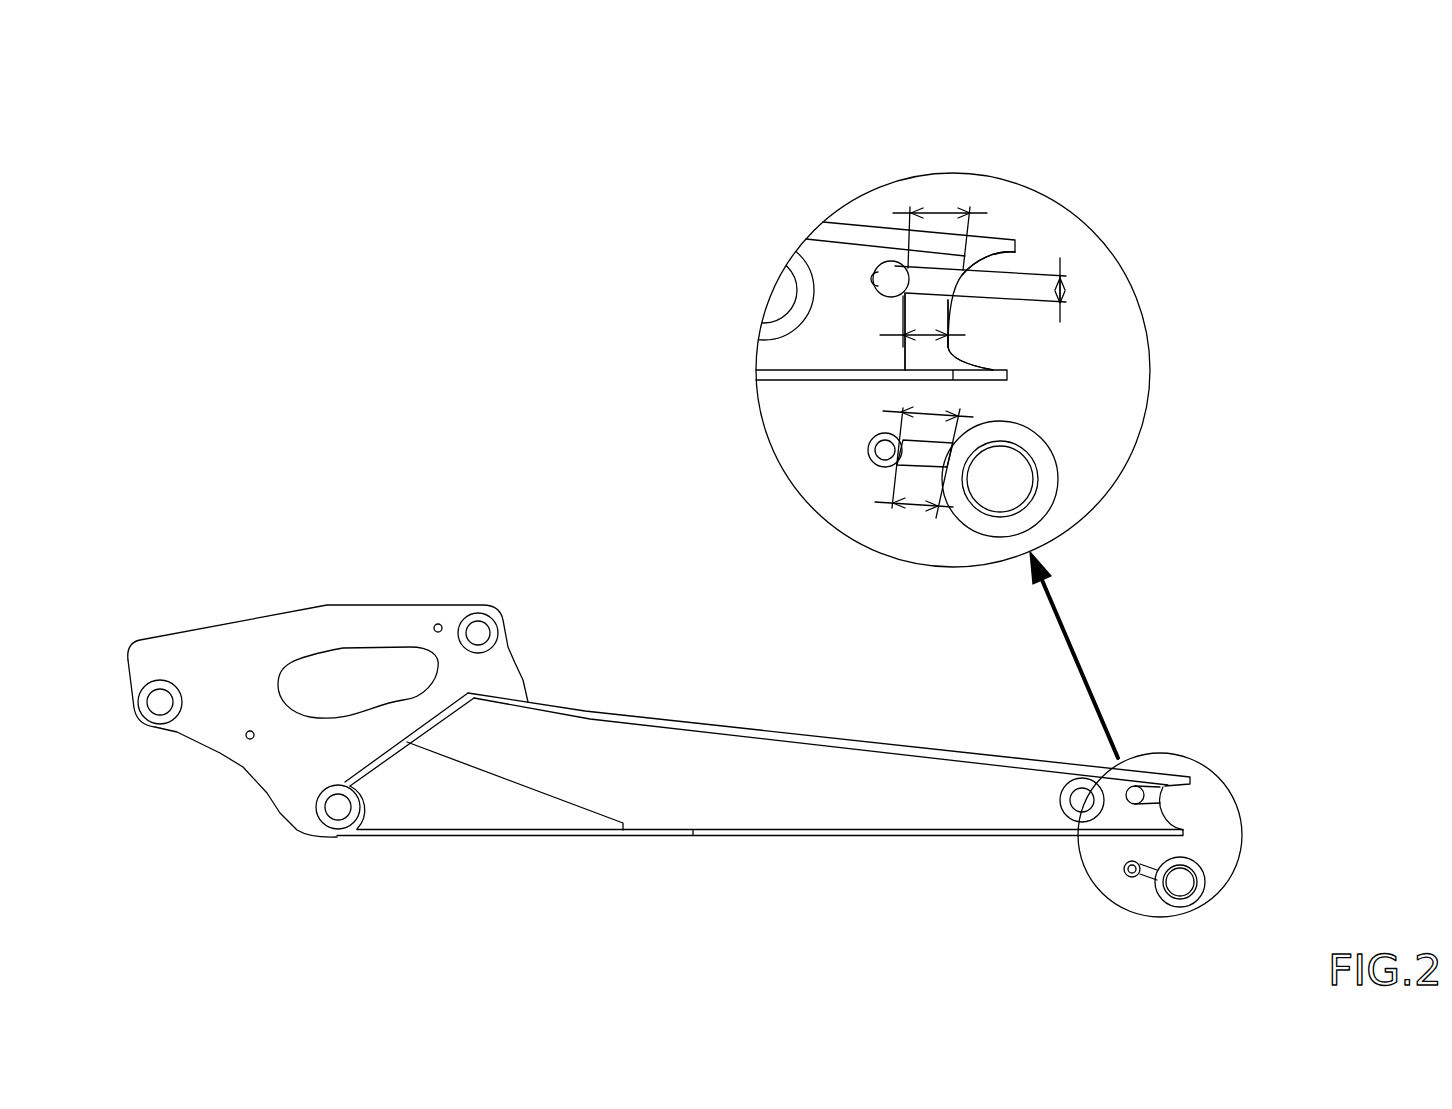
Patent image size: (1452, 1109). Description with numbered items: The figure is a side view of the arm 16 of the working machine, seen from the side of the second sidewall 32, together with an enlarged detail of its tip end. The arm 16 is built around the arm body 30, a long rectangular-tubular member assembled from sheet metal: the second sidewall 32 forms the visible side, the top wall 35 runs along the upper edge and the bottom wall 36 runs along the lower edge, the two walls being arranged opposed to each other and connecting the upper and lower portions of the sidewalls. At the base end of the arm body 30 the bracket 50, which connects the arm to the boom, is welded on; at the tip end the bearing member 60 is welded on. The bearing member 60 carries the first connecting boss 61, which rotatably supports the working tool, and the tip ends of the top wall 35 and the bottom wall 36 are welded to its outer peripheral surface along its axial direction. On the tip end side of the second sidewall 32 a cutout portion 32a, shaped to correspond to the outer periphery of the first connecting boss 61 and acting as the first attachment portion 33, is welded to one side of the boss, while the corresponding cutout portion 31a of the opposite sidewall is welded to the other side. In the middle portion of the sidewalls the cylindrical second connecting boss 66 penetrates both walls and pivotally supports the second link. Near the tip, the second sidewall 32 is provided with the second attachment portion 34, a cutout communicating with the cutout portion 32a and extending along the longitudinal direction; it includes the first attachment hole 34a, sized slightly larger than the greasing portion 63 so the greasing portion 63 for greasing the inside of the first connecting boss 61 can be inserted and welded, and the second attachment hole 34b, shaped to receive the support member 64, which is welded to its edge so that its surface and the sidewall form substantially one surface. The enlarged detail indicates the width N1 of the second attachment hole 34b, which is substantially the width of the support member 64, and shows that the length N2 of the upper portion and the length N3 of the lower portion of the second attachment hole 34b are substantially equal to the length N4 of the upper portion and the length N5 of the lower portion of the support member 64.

The arm 16 is at (665, 599).
The arm body 30 is at (815, 697).
The cutout portion 31a is at (1160, 798).
The second sidewall 32 is at (663, 822).
The cutout portion 32a is at (1161, 775).
The first attachment portion 33 is at (963, 347).
The second attachment portion 34 is at (942, 247).
The first attachment hole 34a is at (883, 263).
The second attachment hole 34b is at (967, 263).
The top wall 35 is at (872, 744).
The bottom wall 36 is at (806, 838).
The bracket 50 is at (422, 603).
The bearing member 60 is at (1185, 912).
The first connecting boss 61 is at (1060, 487).
The greasing portion 63 is at (868, 448).
The support member 64 is at (913, 498).
The second connecting boss 66 is at (1063, 813).
The width of the second attachment hole N1 is at (1060, 262).
The length of the upper portion of the second attachment hole N2 is at (949, 212).
The length of the lower portion of the second attachment hole N3 is at (930, 337).
The length of the upper portion of the support member N4 is at (937, 415).
The length of the lower portion of the support member N5 is at (925, 467).